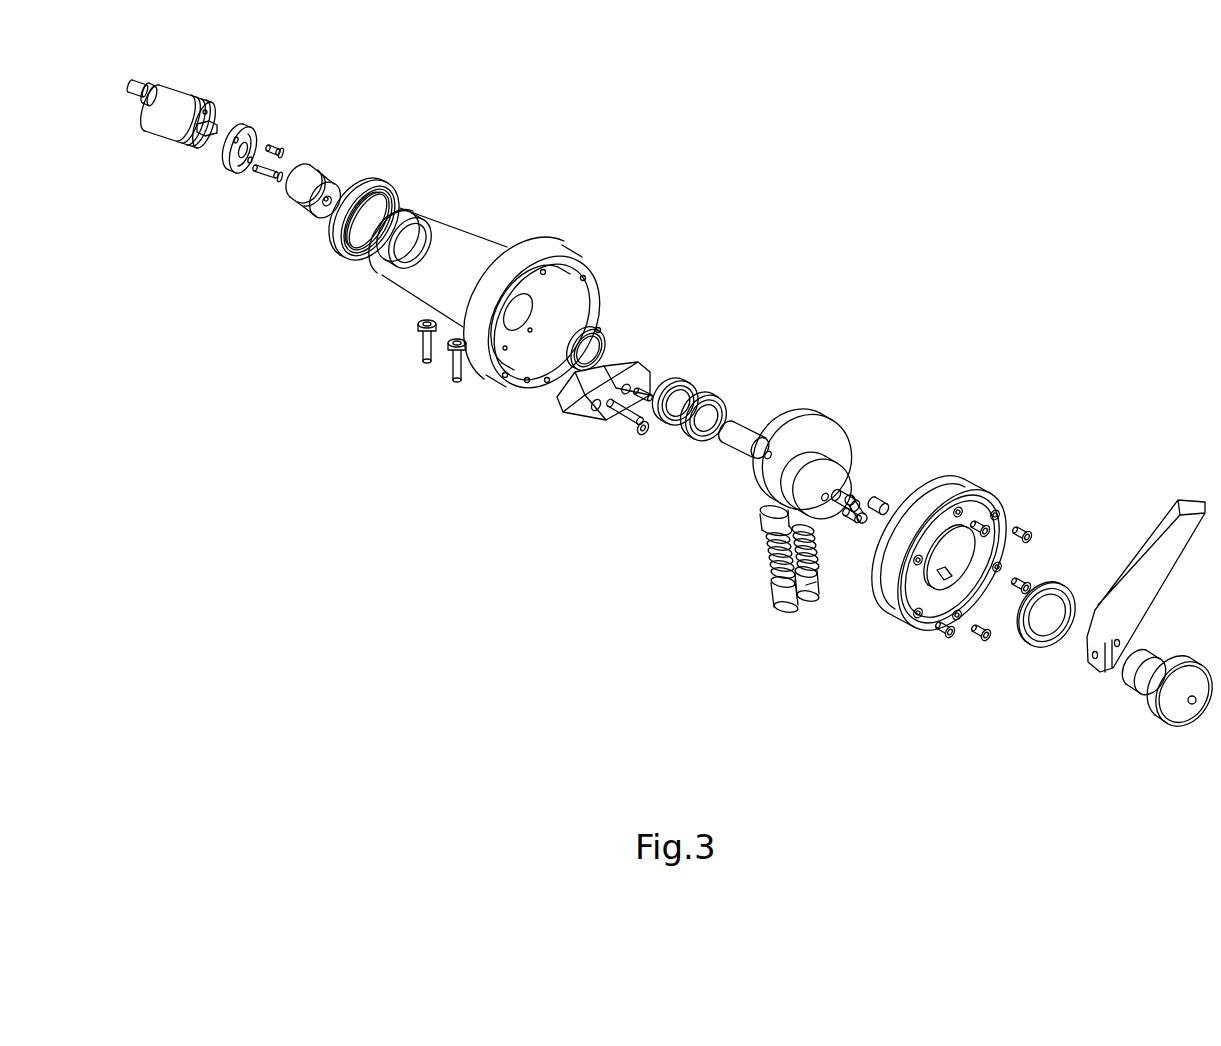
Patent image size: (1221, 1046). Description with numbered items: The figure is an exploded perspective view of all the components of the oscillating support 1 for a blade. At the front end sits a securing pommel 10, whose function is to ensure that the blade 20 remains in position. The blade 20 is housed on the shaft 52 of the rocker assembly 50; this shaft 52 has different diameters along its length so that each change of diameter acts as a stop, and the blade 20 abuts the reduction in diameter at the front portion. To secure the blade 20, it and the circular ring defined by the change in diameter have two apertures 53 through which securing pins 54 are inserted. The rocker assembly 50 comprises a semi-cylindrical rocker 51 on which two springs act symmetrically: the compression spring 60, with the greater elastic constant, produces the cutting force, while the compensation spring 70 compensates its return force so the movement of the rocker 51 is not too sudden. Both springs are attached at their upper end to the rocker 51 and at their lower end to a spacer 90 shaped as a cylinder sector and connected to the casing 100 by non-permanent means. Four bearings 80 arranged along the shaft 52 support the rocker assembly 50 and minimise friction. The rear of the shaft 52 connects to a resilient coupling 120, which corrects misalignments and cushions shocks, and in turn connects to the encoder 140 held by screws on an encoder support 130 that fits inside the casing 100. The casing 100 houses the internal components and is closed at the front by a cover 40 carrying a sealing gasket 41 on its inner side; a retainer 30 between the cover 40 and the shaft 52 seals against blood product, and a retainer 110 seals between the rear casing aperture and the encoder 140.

The oscillating support 1 is at (799, 310).
The securing pommel 10 is at (1153, 700).
The blade 20 is at (1088, 650).
The retainer 30 is at (1060, 590).
The cover 40 is at (993, 497).
The sealing gasket 41 is at (957, 480).
The rocker assembly 50 is at (813, 420).
The rocker 51 is at (786, 468).
The shaft 52 is at (825, 467).
The apertures 53 is at (855, 490).
The securing pins 54 is at (883, 500).
The compression spring 60 is at (815, 558).
The compensation spring 70 is at (767, 560).
The bearing 80 is at (373, 260).
The spacer 90 is at (637, 365).
The casing 100 is at (470, 222).
The retainer 110 is at (392, 188).
The resilient coupling 120 is at (322, 172).
The encoder support 130 is at (239, 127).
The encoder 140 is at (182, 98).